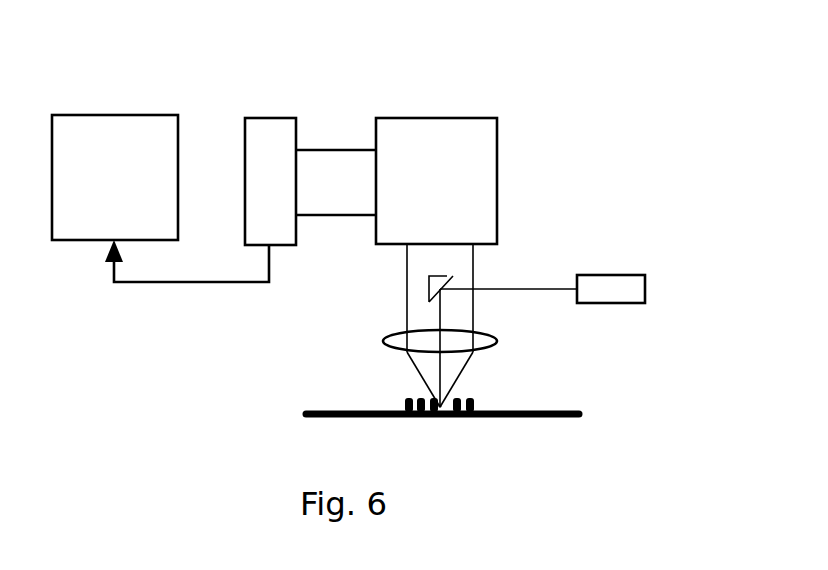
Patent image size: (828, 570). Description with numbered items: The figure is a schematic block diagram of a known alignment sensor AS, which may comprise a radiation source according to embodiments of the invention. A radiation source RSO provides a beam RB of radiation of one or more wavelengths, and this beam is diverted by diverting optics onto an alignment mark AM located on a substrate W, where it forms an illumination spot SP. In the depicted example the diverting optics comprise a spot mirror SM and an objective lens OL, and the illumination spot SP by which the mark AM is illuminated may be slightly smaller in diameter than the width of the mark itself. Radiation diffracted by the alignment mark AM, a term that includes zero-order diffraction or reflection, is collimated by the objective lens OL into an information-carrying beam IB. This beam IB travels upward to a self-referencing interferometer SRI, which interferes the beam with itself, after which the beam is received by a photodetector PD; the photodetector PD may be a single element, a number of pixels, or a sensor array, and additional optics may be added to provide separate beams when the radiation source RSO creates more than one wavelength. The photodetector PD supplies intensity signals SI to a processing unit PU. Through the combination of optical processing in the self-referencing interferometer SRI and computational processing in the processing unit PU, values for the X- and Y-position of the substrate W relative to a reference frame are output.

The processing unit PU is at (115, 177).
The photodetector PD is at (270, 181).
The self-referencing interferometer SRI is at (436, 181).
The intensity signals SI is at (158, 286).
The alignment sensor AS is at (202, 358).
The information-carrying beam IB is at (407, 273).
The spot mirror SM is at (453, 276).
The beam of radiation RB is at (532, 289).
The radiation source RSO is at (611, 292).
The objective lens OL is at (487, 343).
The illumination spot SP is at (457, 380).
The alignment mark AM is at (404, 400).
The substrate W is at (557, 418).